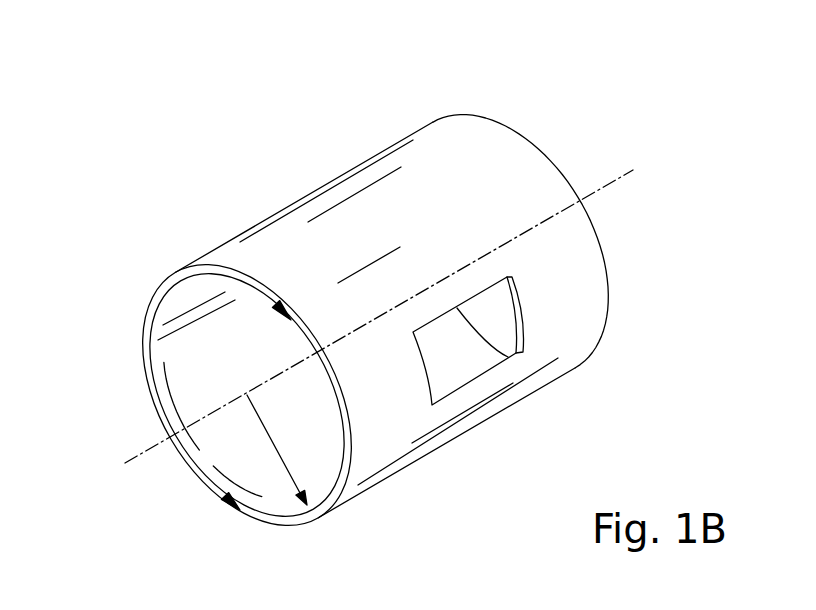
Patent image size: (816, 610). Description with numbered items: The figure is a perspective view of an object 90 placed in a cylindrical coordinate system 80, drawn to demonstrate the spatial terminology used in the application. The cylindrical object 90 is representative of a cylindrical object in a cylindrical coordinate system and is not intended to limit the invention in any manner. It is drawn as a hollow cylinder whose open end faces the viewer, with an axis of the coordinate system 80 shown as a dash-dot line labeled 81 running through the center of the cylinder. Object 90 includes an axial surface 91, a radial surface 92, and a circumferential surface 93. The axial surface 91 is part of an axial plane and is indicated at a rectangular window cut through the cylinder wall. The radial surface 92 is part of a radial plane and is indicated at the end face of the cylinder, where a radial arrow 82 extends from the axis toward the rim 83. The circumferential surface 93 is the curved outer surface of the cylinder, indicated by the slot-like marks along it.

The cylindrical coordinate system 80 is at (551, 122).
The longitudinal axis 81 is at (125, 463).
The radial direction 82 is at (280, 458).
The end rim 83 is at (150, 296).
The object 90 is at (409, 105).
The axial surface 91 is at (492, 372).
The radial surface 92 is at (262, 512).
The circumferential surface 93 is at (355, 215).